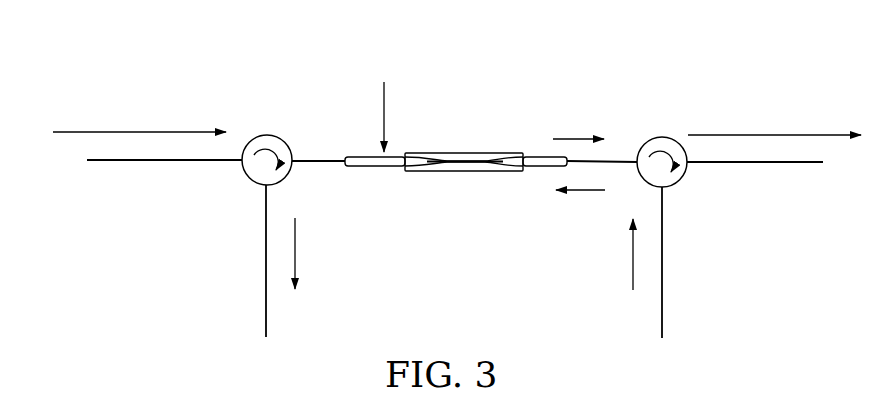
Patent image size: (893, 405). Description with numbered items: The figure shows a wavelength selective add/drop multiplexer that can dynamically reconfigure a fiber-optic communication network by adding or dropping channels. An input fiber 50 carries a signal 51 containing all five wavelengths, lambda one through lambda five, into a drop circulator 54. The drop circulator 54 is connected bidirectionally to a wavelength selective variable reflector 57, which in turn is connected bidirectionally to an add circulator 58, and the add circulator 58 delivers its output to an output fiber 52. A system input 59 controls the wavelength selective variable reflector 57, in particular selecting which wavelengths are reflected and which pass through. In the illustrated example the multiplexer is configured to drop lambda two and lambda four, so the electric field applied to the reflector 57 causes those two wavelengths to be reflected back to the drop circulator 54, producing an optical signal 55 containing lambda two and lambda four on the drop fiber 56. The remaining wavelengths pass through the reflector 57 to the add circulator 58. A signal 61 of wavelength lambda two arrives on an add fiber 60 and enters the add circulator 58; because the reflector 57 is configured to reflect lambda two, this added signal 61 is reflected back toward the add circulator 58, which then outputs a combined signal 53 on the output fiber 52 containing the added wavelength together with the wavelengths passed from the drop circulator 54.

The input fiber 50 is at (115, 161).
The input signal 51 is at (67, 133).
The output fiber 52 is at (807, 165).
The output signal 53 is at (843, 138).
The drop circulator 54 is at (278, 136).
The dropped optical signal 55 is at (297, 272).
The drop fiber 56 is at (265, 305).
The wavelength selective variable reflector 57 is at (463, 153).
The add circulator 58 is at (647, 136).
The system input 59 is at (382, 102).
The add fiber 60 is at (663, 303).
The added signal 61 is at (632, 272).